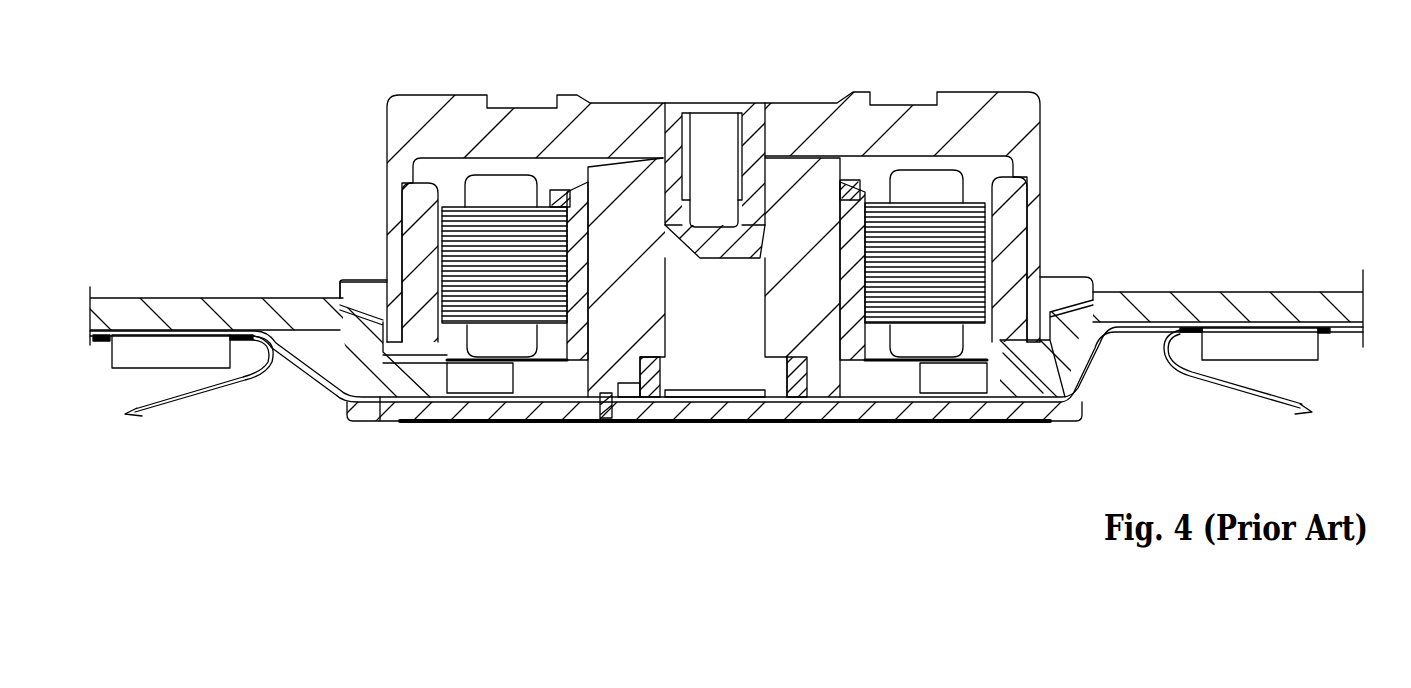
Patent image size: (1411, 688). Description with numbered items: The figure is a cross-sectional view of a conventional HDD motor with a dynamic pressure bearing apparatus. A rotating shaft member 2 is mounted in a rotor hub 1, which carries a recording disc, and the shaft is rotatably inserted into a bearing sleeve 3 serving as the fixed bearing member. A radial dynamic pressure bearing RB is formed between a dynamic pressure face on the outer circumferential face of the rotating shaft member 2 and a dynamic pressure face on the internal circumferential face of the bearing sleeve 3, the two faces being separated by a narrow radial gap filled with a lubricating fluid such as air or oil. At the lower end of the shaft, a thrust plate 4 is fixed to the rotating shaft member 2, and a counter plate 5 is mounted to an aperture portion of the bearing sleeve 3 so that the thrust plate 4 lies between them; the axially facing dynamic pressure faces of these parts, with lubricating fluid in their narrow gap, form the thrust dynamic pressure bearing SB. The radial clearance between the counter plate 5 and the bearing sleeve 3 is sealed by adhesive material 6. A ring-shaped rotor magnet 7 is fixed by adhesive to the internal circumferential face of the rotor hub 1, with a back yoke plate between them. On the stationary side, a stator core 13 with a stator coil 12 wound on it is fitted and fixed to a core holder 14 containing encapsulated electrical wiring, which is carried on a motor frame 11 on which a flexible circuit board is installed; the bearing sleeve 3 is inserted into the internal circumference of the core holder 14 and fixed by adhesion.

The rotor hub 1 is at (1030, 118).
The rotating shaft member 2 is at (712, 133).
The bearing sleeve 3 is at (782, 286).
The thrust plate 4 is at (652, 420).
The counter plate 5 is at (717, 420).
The adhesive material 6 is at (607, 420).
The rotor magnet 7 is at (1000, 335).
The motor frame 11 is at (1247, 292).
The stator coil 12 is at (937, 188).
The stator core 13 is at (1010, 316).
The core holder 14 is at (853, 417).
The radial dynamic pressure bearing RB is at (663, 273).
The thrust dynamic pressure bearing SB is at (788, 353).